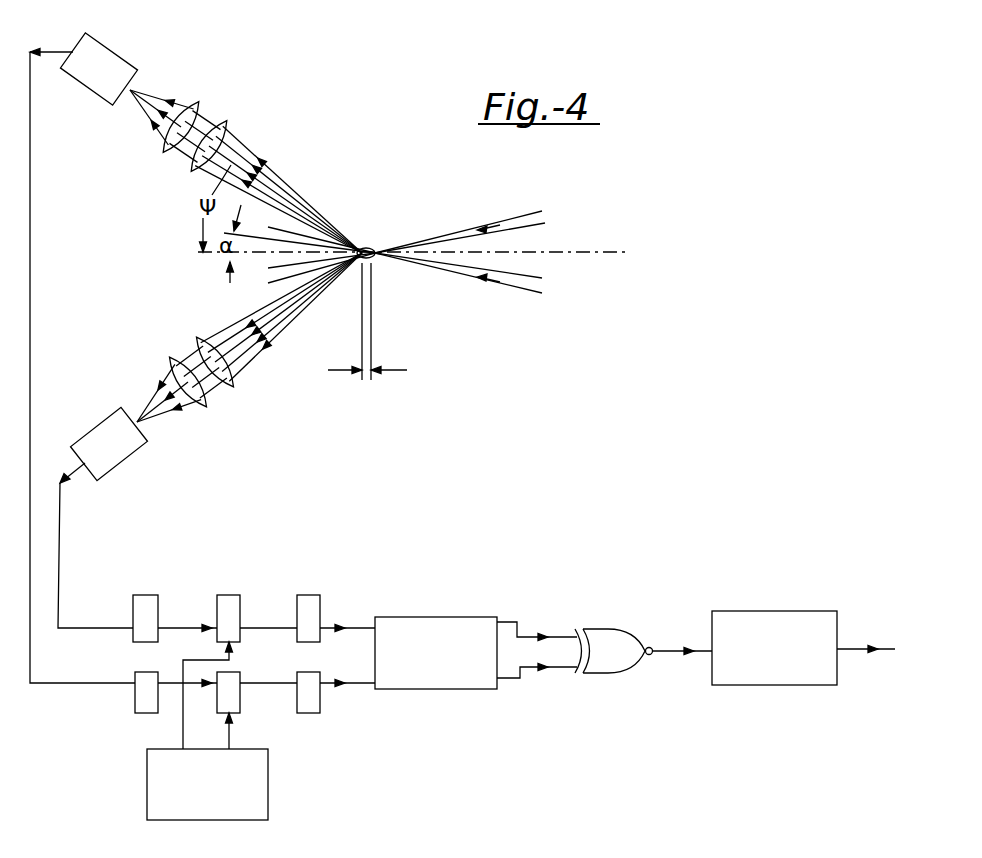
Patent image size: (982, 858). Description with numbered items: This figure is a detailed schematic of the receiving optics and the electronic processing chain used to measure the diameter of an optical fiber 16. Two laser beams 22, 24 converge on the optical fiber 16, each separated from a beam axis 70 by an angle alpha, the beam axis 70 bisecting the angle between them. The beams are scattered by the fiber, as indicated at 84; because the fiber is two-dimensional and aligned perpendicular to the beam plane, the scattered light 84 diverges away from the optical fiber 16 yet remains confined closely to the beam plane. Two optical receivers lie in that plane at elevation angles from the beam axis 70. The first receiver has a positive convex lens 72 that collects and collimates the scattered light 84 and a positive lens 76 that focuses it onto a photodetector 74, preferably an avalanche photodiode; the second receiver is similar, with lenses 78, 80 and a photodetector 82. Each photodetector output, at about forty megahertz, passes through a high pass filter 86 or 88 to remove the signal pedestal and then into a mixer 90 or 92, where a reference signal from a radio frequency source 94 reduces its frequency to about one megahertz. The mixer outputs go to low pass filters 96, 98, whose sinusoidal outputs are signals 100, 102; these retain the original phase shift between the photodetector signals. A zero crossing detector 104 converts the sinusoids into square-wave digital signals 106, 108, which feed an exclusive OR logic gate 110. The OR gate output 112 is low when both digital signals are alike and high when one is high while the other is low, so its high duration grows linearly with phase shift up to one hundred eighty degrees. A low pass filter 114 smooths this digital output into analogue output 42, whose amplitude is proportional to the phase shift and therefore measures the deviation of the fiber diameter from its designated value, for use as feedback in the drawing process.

The optical fiber 16 is at (368, 246).
The laser beam 22 is at (523, 212).
The laser beam 24 is at (523, 292).
The output signal 42 is at (890, 647).
The beam axis 70 is at (607, 250).
The positive (convex) lens 72 is at (225, 121).
The photodetector 74 is at (127, 62).
The positive lens 76 is at (200, 102).
The lens 78 is at (197, 337).
The lens 80 is at (170, 358).
The photodetector 82 is at (78, 443).
The scattered light 84 is at (246, 160).
The high pass filter 86 is at (147, 595).
The high pass filter 88 is at (145, 714).
The mixer 90 is at (228, 595).
The mixer 92 is at (232, 714).
The radio frequency source 94 is at (257, 821).
The low pass filter 96 is at (310, 594).
The low pass filter 98 is at (308, 714).
The output signal of low pass filter 96 100 is at (360, 623).
The output signal of low pass filter 98 102 is at (362, 688).
The zero crossing detector 104 is at (465, 617).
The digital signal 106 is at (508, 621).
The digital signal 108 is at (505, 680).
The exclusive OR logic gate 110 is at (627, 628).
The OR gate output 112 is at (665, 654).
The low pass filter 114 is at (803, 611).